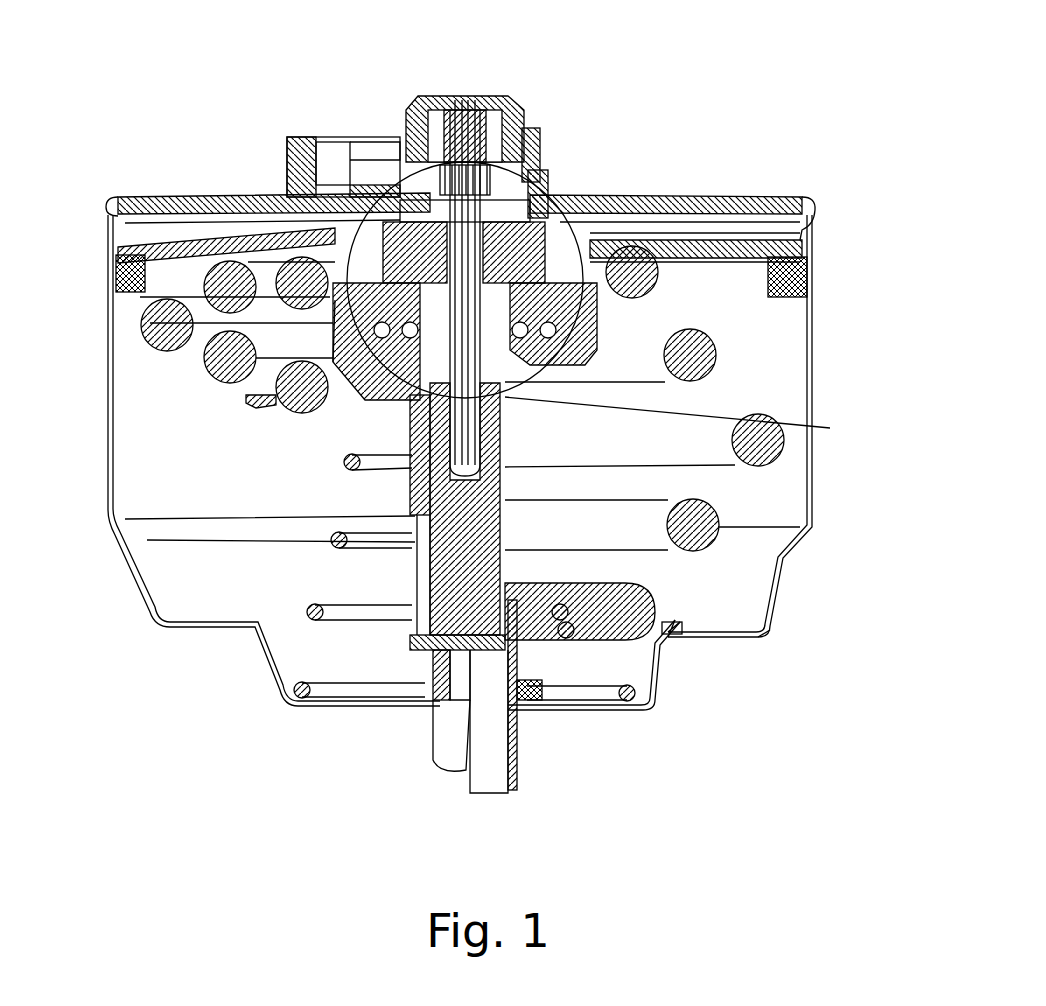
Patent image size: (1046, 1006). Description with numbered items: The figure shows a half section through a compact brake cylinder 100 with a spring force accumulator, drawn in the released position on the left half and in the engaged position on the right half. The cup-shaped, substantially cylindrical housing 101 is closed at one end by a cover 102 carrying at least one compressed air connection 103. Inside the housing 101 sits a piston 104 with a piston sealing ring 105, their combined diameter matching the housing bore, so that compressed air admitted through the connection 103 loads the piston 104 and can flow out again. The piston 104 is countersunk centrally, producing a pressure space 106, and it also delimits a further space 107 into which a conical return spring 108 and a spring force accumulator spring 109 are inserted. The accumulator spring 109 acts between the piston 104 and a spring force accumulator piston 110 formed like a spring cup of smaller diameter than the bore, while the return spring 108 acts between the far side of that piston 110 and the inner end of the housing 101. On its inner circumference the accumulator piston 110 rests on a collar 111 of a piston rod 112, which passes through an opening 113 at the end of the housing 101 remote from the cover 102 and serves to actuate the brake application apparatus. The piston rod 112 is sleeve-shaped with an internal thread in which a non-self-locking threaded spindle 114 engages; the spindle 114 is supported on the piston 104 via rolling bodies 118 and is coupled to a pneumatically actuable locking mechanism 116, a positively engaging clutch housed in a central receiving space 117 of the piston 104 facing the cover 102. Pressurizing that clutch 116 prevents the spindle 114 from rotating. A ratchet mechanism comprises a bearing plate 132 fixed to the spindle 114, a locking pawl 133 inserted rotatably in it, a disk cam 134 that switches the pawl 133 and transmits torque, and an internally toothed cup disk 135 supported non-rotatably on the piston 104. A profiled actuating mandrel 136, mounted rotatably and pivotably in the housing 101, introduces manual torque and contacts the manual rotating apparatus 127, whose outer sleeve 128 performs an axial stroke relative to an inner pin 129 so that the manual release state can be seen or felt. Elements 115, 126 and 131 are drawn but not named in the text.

The brake cylinder 100 is at (775, 652).
The housing 101 is at (813, 497).
The cover 102 is at (152, 197).
The compressed air connection 103 is at (370, 152).
The piston 104 is at (215, 240).
The piston sealing ring 105 is at (112, 275).
The pressure space 106 is at (290, 175).
The further space 107 is at (745, 485).
The conical return spring 108 is at (602, 710).
The spring force accumulator spring 109 is at (700, 523).
The spring force accumulator piston 110 is at (678, 634).
The collar 111 is at (535, 622).
The piston rod 112 is at (443, 730).
The opening 113 is at (523, 723).
The threaded spindle 114 is at (420, 622).
The guide 115 is at (268, 636).
The locking mechanism 116 is at (612, 325).
The central receiving space 117 is at (335, 322).
The rolling bodies 118 is at (270, 405).
The cover rim 126 is at (795, 203).
The manual rotating apparatus 127 is at (520, 113).
The outer sleeve 128 is at (540, 135).
The inner pin 129 is at (474, 118).
The spring seat 131 is at (685, 415).
The bearing plate 132 is at (595, 285).
The locking pawl 133 is at (803, 265).
The disk cam 134 is at (600, 210).
The cup disk 135 is at (565, 210).
The actuating mandrel 136 is at (543, 182).